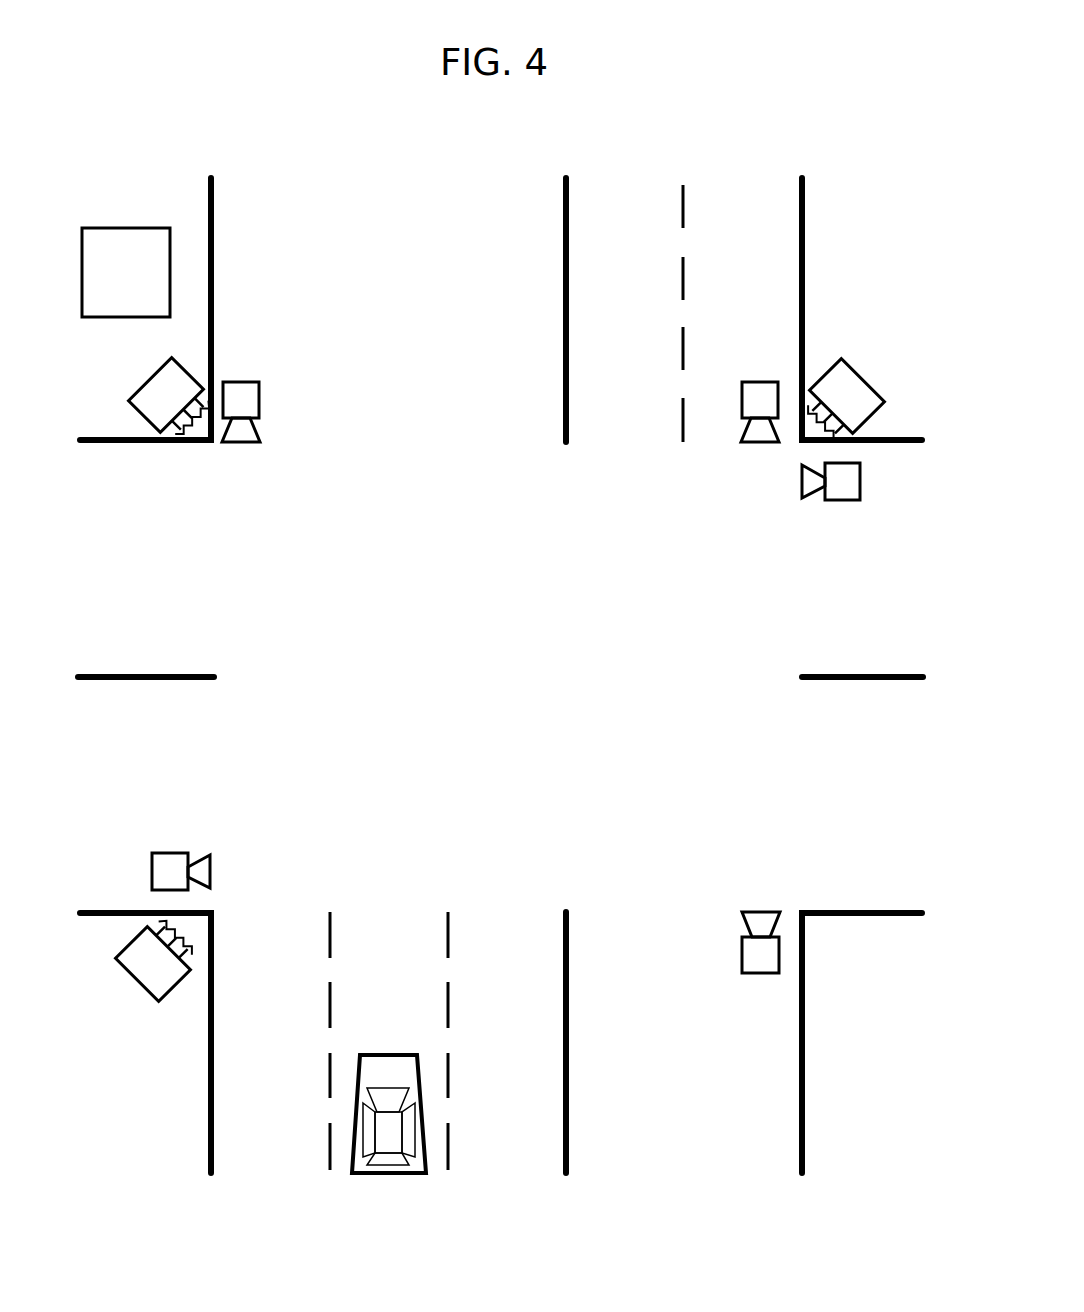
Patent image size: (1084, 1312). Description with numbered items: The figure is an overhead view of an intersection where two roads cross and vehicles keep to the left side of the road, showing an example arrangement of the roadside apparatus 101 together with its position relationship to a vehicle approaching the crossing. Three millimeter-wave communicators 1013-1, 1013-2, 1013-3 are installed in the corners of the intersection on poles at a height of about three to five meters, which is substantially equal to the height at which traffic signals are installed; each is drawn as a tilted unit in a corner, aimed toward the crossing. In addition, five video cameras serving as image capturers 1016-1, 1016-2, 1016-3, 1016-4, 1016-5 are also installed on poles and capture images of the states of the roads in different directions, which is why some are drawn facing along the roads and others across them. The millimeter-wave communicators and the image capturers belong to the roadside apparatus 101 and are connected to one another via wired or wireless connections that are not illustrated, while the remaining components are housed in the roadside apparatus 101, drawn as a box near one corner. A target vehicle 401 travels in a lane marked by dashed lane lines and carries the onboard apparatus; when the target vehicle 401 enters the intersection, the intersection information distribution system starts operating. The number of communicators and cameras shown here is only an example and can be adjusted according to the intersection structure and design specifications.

The roadside apparatus 101 is at (113, 227).
The millimeter-wave communicator 1013-1 is at (147, 375).
The millimeter-wave communicator 1013-2 is at (908, 350).
The millimeter-wave communicator 1013-3 is at (150, 997).
The image capturer 1016-1 is at (245, 380).
The image capturer 1016-2 is at (757, 380).
The image capturer 1016-3 is at (842, 502).
The image capturer 1016-4 is at (770, 912).
The image capturer 1016-5 is at (232, 818).
The target vehicle 401 is at (362, 1053).